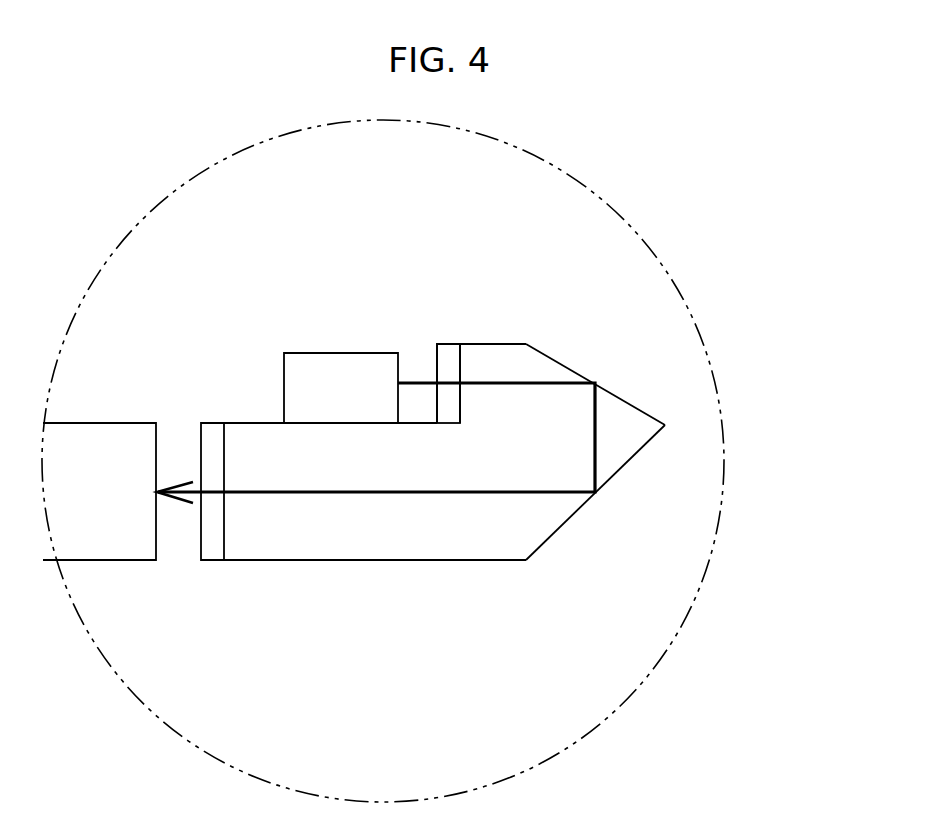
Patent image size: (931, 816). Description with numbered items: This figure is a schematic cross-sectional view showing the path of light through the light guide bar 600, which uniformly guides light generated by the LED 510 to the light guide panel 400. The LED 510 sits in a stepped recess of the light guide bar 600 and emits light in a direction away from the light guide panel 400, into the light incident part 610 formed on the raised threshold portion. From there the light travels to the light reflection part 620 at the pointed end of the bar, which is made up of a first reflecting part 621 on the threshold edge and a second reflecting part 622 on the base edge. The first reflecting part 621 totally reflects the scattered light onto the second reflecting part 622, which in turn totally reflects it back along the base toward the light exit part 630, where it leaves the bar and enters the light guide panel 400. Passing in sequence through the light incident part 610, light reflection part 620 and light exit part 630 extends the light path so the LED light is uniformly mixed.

The light guide panel 400 is at (100, 433).
The LED 510 is at (328, 357).
The light incident part 610 is at (447, 360).
The light reflection part 620 is at (689, 452).
The first reflecting part 621 is at (568, 368).
The second reflecting part 622 is at (632, 457).
The light exit part 630 is at (217, 552).
The light guide bar 600 is at (505, 471).